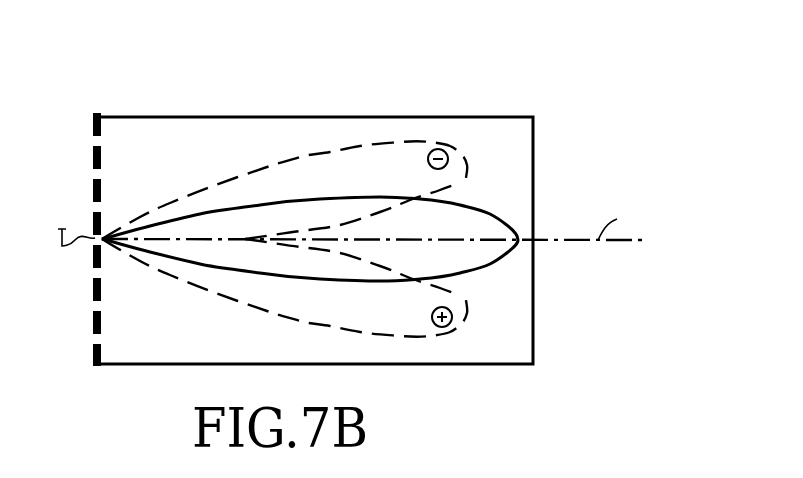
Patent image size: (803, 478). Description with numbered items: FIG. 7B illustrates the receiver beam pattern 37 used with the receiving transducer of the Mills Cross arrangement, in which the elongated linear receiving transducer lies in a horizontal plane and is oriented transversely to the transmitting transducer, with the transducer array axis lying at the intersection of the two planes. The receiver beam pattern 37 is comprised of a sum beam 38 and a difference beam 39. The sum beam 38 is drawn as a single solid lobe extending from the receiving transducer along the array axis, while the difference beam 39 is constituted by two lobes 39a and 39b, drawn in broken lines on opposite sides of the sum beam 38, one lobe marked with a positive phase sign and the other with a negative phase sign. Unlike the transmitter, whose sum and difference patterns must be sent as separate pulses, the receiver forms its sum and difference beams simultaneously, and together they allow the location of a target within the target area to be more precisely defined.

The receiver beam pattern 37 is at (490, 185).
The sum beam 38 is at (510, 220).
The difference beam 39 is at (284, 233).
The lobe 39a is at (410, 338).
The lobe 39b is at (407, 142).